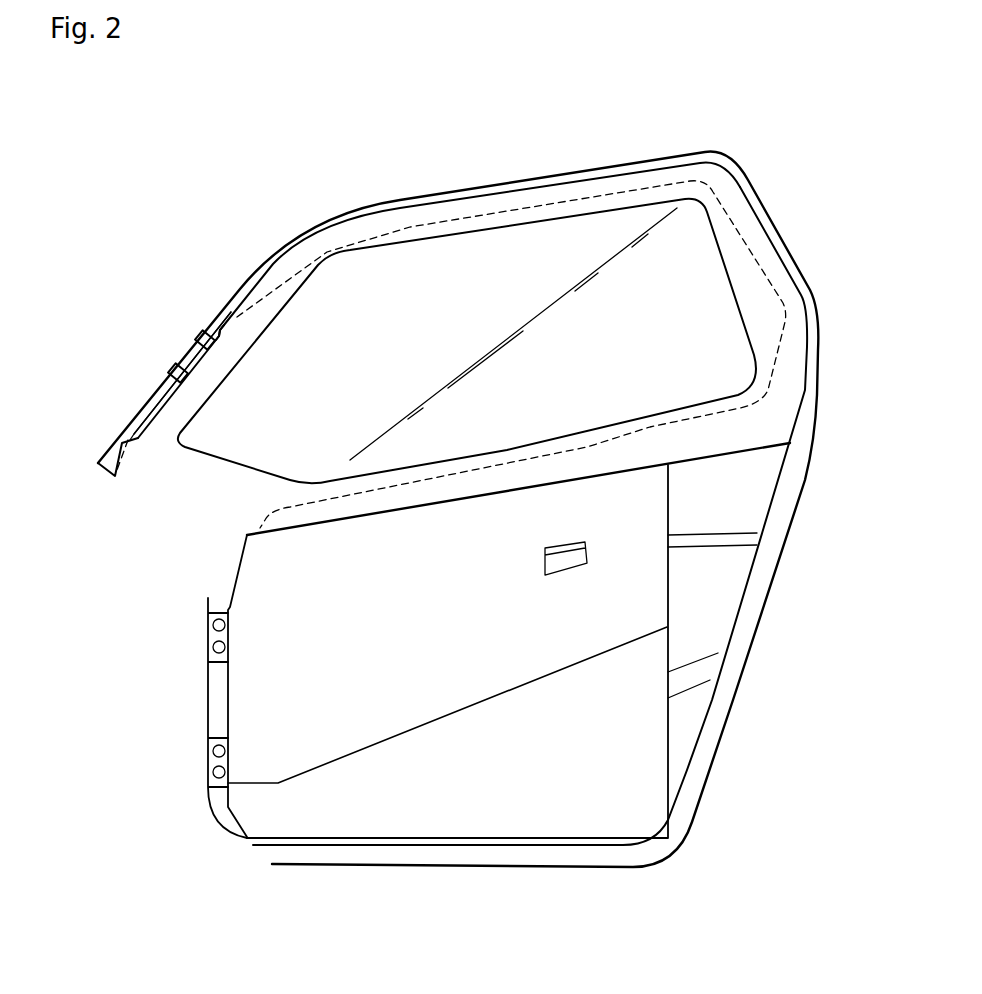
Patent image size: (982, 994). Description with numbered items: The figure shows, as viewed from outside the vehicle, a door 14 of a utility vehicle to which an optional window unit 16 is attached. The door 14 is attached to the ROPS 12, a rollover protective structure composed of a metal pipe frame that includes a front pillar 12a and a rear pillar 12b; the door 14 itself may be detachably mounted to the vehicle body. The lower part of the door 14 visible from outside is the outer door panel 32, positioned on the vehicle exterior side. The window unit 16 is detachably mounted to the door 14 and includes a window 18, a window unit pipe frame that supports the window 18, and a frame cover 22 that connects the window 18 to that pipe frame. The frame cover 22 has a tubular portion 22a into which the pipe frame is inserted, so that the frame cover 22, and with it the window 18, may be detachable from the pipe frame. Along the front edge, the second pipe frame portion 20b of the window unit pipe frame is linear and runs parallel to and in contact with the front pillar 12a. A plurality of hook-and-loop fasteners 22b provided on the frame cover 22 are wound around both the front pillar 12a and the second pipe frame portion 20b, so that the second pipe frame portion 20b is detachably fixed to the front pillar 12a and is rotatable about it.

The ROPS 12 is at (467, 188).
The front pillar 12a is at (229, 318).
The rear pillar 12b is at (788, 243).
The door 14 is at (499, 640).
The outer door panel 32 is at (500, 784).
The window unit 16 is at (544, 186).
The window 18 is at (523, 288).
The second pipe frame portion 20b is at (147, 415).
The frame cover 22 is at (313, 250).
The tubular portion 22a is at (617, 190).
The hook-and-loop fasteners 22b is at (193, 335).